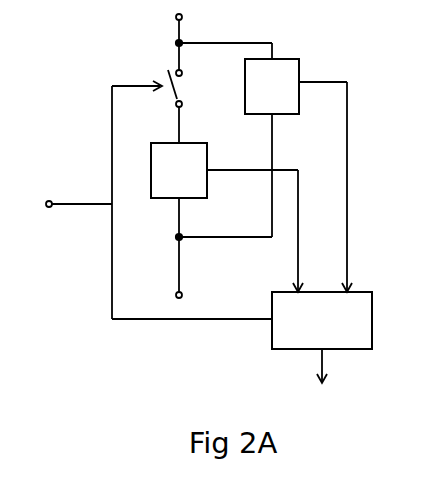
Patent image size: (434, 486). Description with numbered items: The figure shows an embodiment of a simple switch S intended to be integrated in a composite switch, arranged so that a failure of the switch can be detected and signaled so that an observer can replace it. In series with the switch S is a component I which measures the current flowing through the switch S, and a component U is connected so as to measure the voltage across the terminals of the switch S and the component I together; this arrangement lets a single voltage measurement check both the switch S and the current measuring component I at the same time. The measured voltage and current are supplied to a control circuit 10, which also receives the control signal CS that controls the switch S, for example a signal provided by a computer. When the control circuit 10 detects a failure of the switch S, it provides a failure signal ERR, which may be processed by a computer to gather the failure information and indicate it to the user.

The control circuit 10 is at (368, 304).
The simple switch S is at (186, 88).
The voltage measuring component U is at (272, 86).
The current measuring component I is at (179, 170).
The control signal CS is at (73, 189).
The failure signal ERR is at (322, 381).